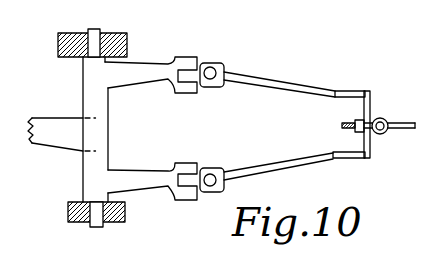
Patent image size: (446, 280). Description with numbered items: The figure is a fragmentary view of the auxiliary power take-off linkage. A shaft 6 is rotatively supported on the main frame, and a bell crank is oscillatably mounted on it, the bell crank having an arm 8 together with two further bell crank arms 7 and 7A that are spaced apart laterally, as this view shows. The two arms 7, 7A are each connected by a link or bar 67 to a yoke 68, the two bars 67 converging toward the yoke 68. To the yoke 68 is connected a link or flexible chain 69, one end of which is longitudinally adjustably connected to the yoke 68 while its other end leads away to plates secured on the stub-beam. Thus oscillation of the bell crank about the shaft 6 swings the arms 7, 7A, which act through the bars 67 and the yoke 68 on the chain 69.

The shaft 6 is at (80, 168).
The bell crank arm 7 is at (141, 180).
The bell crank arm 7A is at (143, 64).
The bell crank arm 8 is at (61, 125).
The link or bar 67 is at (282, 83).
The yoke 68 is at (371, 107).
The link or flexible chain 69 is at (404, 126).